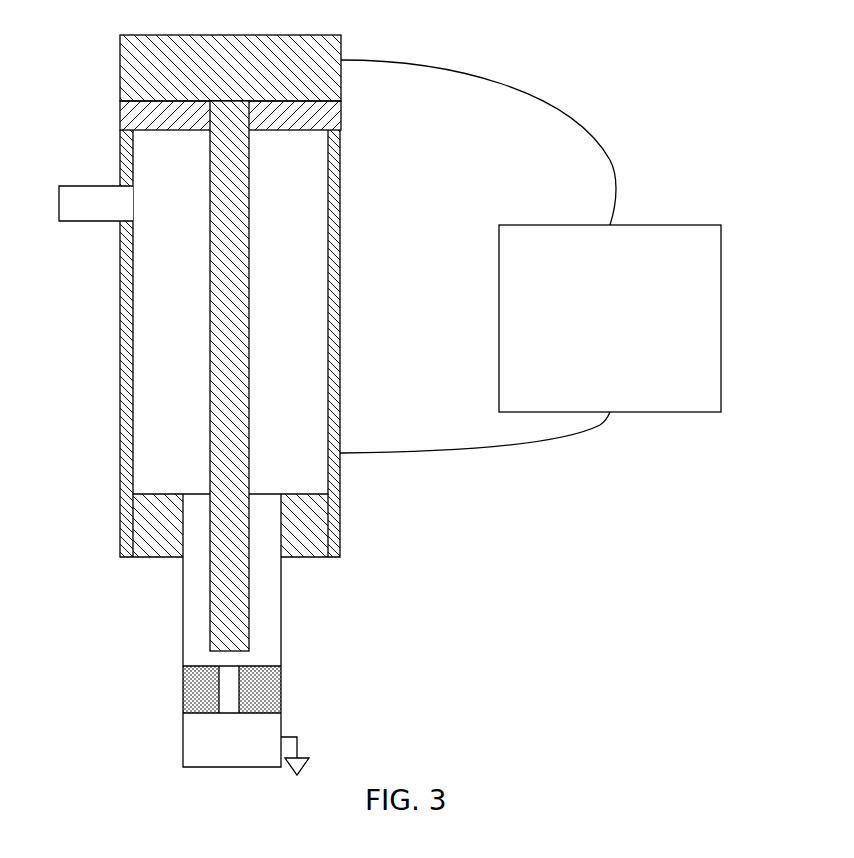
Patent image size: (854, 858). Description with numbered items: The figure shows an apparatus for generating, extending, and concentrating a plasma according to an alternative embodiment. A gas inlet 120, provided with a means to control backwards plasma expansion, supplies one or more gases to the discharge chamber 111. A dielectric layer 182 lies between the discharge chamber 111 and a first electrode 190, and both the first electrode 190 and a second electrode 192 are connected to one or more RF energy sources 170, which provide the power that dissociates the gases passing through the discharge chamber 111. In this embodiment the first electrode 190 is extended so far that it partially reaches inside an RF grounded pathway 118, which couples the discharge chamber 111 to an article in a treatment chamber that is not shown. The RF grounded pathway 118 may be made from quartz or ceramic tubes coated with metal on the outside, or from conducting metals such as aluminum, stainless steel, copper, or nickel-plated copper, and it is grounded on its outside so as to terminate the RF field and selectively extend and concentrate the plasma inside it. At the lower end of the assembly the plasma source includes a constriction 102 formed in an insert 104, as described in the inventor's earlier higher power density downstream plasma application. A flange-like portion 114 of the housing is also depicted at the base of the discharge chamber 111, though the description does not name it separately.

The constriction 102 is at (232, 692).
The insert 104 is at (268, 698).
The discharge chamber 111 is at (160, 275).
The flange 114 is at (303, 524).
The RF grounded pathway 118 is at (191, 732).
The gas inlet 120 is at (91, 201).
The RF energy sources 170 is at (530, 256).
The dielectric layer 182 is at (291, 119).
The first electrode 190 is at (201, 72).
The second electrode 192 is at (343, 413).